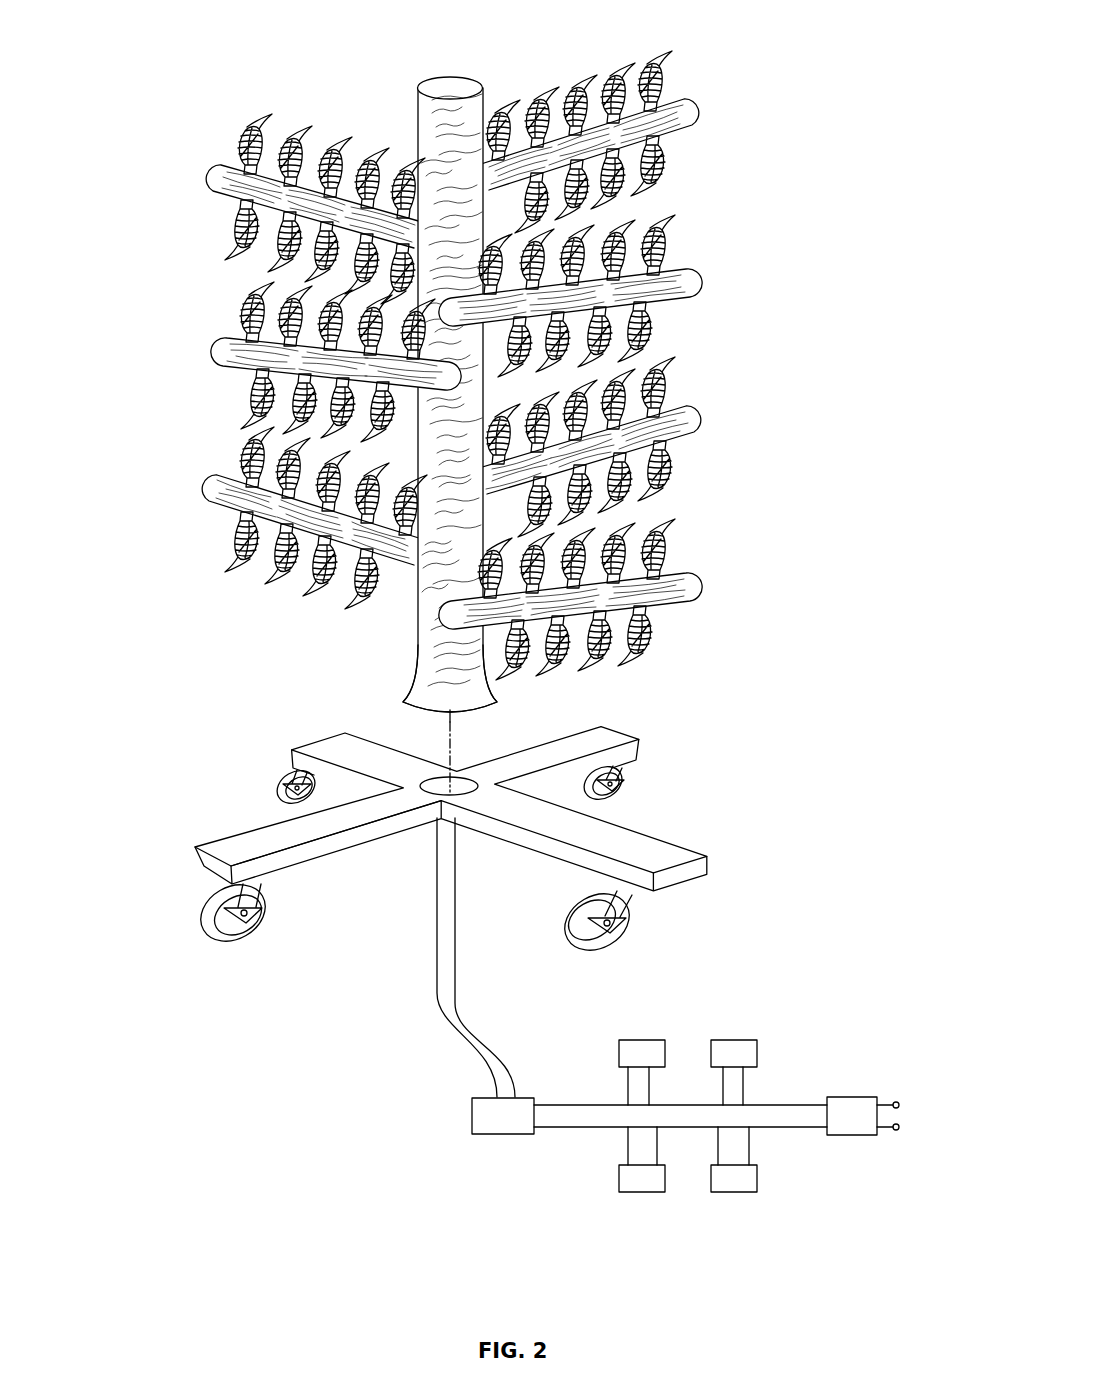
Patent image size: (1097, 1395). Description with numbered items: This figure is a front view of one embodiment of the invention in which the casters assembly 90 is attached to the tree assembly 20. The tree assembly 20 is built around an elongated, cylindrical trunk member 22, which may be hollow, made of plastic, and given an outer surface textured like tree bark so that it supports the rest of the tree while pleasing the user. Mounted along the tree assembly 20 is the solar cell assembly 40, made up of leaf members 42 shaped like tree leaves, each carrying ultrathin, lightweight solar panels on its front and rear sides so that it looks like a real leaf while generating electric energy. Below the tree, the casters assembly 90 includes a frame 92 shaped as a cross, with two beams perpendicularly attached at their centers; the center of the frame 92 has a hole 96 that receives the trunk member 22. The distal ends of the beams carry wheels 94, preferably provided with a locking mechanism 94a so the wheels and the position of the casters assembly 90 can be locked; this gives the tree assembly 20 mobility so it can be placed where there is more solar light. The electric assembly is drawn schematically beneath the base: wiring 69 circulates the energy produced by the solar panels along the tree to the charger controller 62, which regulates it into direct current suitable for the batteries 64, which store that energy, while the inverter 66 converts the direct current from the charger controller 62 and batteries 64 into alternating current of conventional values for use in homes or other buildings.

The tree assembly 20 is at (450, 86).
The trunk member 22 is at (422, 612).
The solar cell assembly 40 is at (643, 53).
The leaf member 42 is at (280, 115).
The charger controller 62 is at (488, 1134).
The batteries 64 is at (637, 1040).
The inverter 66 is at (850, 1097).
The wiring 69 is at (437, 993).
The casters assembly 90 is at (411, 838).
The frame 92 is at (300, 857).
The wheels 94 is at (573, 912).
The locking mechanism 94a is at (450, 847).
The hole 96 is at (433, 787).